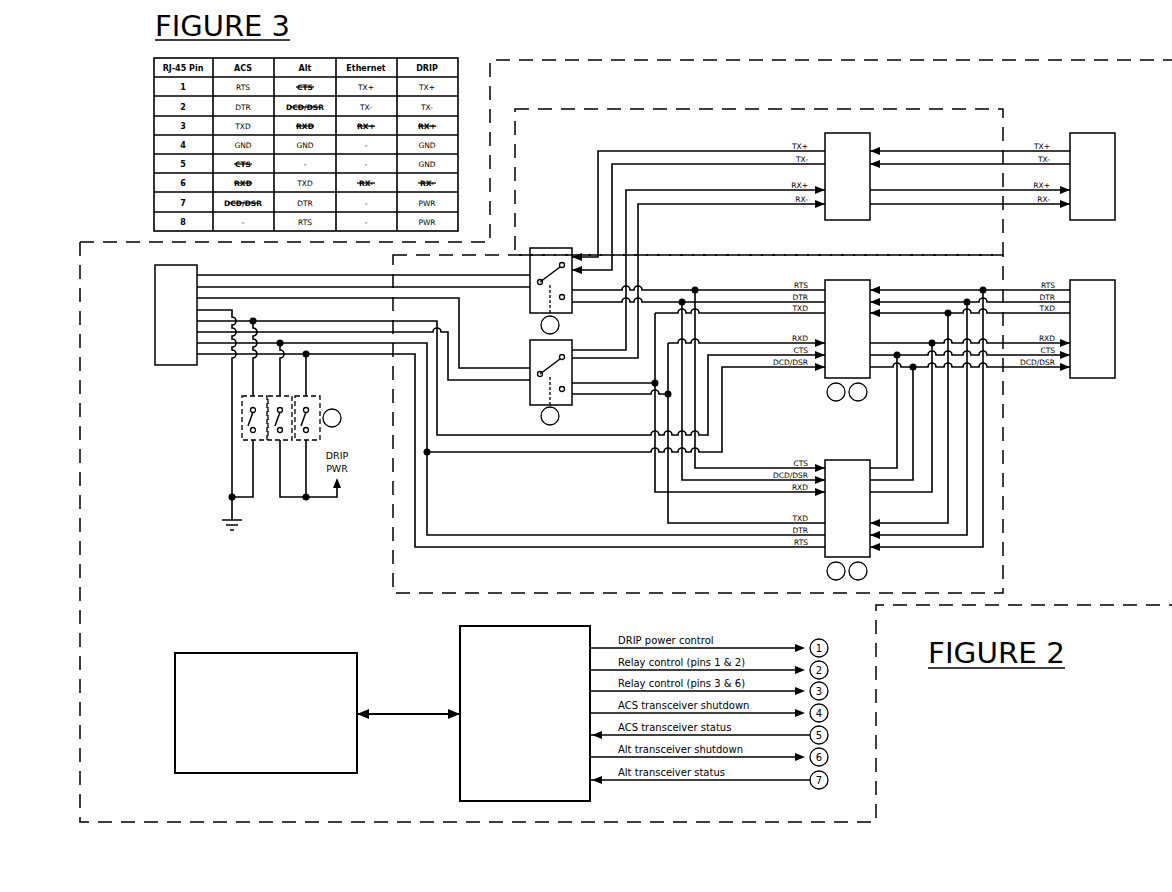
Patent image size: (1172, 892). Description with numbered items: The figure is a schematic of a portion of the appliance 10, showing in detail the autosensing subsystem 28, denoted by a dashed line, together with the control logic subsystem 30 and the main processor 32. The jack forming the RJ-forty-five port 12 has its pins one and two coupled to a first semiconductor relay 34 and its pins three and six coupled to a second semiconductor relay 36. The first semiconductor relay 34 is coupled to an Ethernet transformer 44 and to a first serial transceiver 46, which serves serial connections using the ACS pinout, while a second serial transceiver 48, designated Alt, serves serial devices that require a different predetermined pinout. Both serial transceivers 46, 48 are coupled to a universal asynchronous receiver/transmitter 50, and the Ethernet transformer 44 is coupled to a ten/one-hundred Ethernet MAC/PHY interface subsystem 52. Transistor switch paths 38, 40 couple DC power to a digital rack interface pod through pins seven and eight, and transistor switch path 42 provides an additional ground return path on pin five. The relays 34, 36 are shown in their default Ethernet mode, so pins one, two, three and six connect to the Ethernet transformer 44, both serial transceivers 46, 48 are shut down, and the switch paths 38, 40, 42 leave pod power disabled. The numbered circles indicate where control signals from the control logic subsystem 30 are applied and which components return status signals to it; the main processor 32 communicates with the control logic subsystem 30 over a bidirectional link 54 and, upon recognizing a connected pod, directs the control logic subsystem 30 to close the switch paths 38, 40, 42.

The appliance 10 is at (626, 425).
The RJ-45 port 12 is at (158, 331).
The autosensing subsystem 28 is at (759, 166).
The control logic subsystem 30 is at (516, 771).
The main processor 32 is at (257, 739).
The first semiconductor relay 34 is at (521, 291).
The second semiconductor relay 36 is at (519, 382).
The transistor switch path 38 is at (338, 403).
The transistor switch path 40 is at (294, 473).
The transistor switch path 42 is at (221, 418).
The Ethernet transformer 44 is at (812, 192).
The first RS-232 transceiver 46 is at (878, 313).
The second RS-232 transceiver 48 is at (857, 498).
The universal asynchronous receiver/transmitter (UART) 50 is at (1076, 351).
The 10/100 Ethernet/MAC/PHY interface subsystem 52 is at (1067, 192).
The bus between main processor and control logic 54 is at (443, 663).